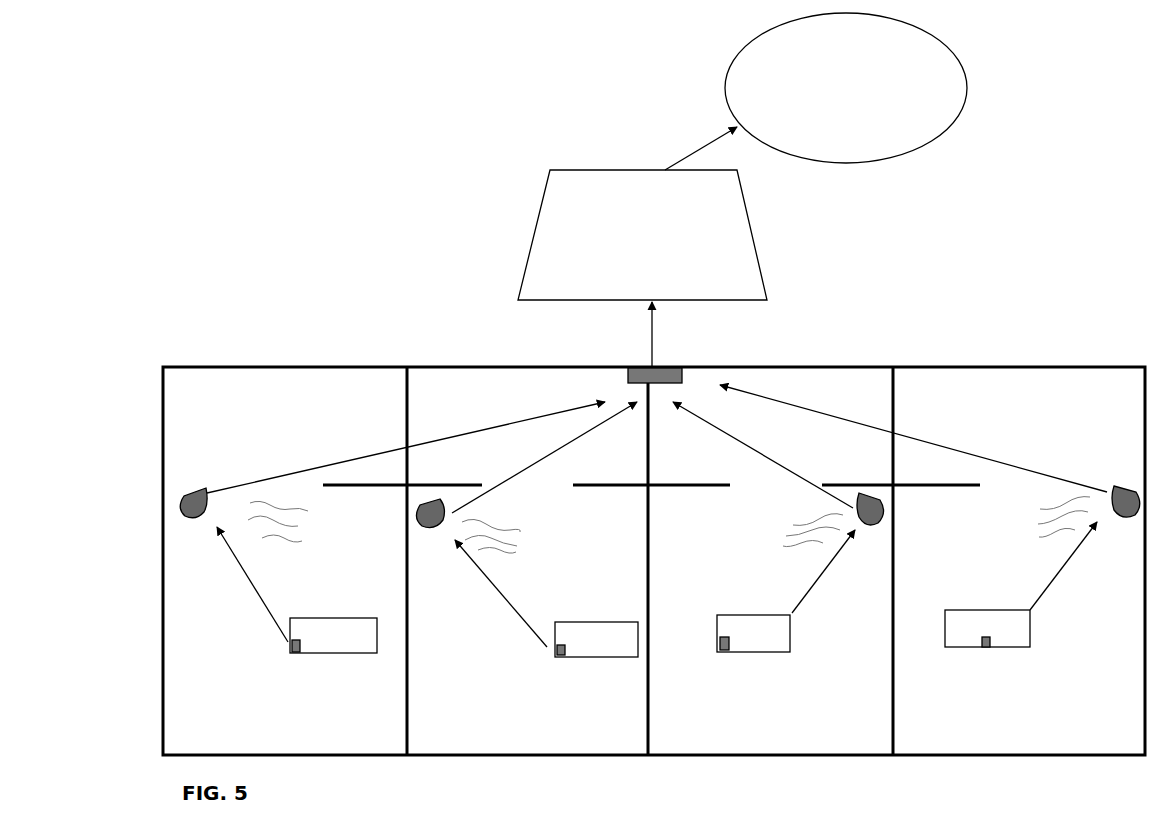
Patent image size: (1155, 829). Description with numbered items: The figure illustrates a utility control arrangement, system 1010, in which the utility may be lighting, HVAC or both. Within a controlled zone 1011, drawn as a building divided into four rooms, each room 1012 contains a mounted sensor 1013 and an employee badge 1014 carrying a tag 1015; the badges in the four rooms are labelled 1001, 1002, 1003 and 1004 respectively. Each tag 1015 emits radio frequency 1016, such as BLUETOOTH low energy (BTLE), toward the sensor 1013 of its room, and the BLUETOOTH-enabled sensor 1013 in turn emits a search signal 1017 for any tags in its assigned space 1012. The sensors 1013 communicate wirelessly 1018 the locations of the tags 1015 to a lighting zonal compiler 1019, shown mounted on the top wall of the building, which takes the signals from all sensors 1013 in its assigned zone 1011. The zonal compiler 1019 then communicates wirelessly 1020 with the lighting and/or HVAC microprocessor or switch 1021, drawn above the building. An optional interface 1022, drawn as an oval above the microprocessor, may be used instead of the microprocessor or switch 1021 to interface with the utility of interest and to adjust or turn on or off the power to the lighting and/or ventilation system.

The first beacon device identifier 1001 is at (324, 635).
The second beacon device identifier 1002 is at (590, 641).
The third beacon device identifier 1003 is at (752, 633).
The fourth beacon device identifier 1004 is at (980, 630).
The system 1010 is at (868, 285).
The controlled zone 1011 is at (256, 363).
The room 1012 is at (323, 734).
The mounted sensor 1013 is at (195, 527).
The employee badge 1014 is at (355, 647).
The tag 1015 is at (290, 650).
The radio frequency 1016 is at (248, 592).
The search signal 1017 is at (293, 528).
The wireless communication 1018 is at (360, 458).
The lighting zonal compiler 1019 is at (625, 380).
The wireless communication 1020 is at (663, 338).
The microprocessor or switch 1021 is at (530, 253).
The interface 1022 is at (960, 57).